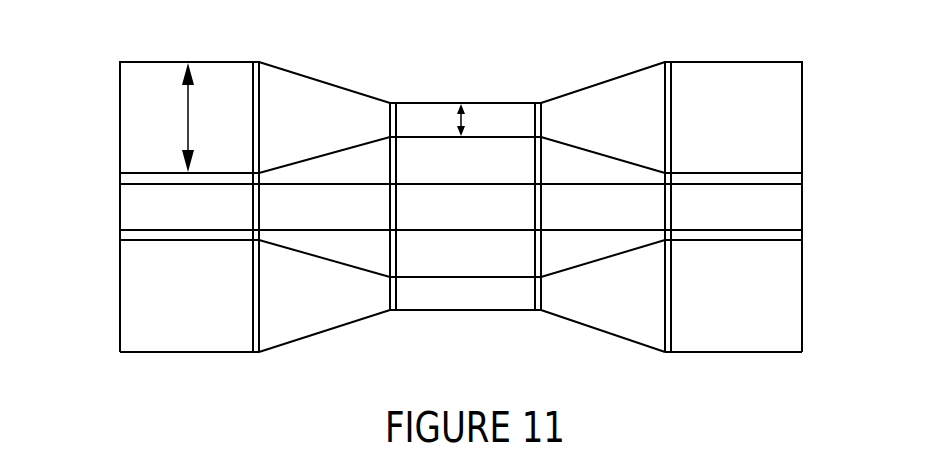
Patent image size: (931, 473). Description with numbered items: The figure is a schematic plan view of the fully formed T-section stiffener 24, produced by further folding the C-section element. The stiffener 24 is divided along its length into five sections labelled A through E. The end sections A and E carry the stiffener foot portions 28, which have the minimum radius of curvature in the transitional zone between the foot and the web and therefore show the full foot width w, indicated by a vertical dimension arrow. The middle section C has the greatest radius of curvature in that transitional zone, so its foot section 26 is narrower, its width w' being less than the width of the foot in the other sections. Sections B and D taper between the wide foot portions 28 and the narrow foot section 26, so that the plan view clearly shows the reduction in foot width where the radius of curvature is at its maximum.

The stiffener 24 is at (99, 209).
The foot section 26 is at (428, 112).
The stiffener foot portion 28 is at (161, 70).